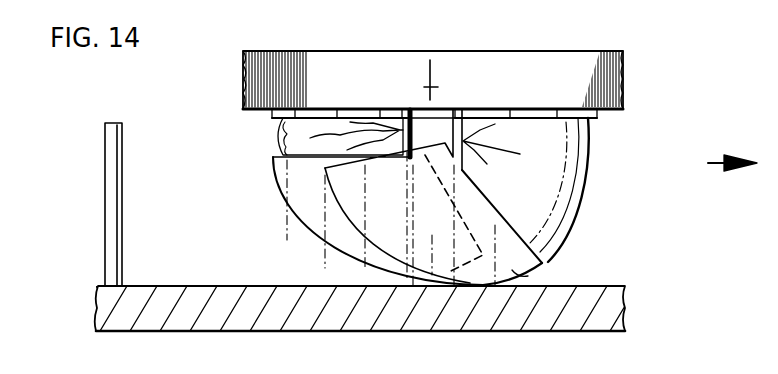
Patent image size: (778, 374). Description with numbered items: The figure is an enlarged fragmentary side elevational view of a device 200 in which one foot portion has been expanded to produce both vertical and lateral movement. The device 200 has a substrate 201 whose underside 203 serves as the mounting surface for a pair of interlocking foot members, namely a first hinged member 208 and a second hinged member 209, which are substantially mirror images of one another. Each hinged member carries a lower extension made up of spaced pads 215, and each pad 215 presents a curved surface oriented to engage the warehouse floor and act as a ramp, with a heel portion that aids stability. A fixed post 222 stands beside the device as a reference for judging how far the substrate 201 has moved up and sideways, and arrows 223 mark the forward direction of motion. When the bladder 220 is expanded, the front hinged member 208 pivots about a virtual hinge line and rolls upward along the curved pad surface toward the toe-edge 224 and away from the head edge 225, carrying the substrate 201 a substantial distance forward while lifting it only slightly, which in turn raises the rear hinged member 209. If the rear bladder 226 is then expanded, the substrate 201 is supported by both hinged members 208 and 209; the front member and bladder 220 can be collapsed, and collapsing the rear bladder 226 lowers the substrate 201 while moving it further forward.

The device 200 is at (483, 60).
The substrate 201 is at (468, 56).
The underside of substrate 203 is at (603, 112).
The first hinged member 208 is at (522, 278).
The second hinged member 209 is at (318, 234).
The pad 215 is at (432, 255).
The bladder 220 is at (586, 172).
The post 222 is at (124, 146).
The arrows 223 is at (710, 158).
The toe-edge 224 is at (548, 262).
The head edge 225 is at (272, 158).
The rear bladder 226 is at (277, 132).